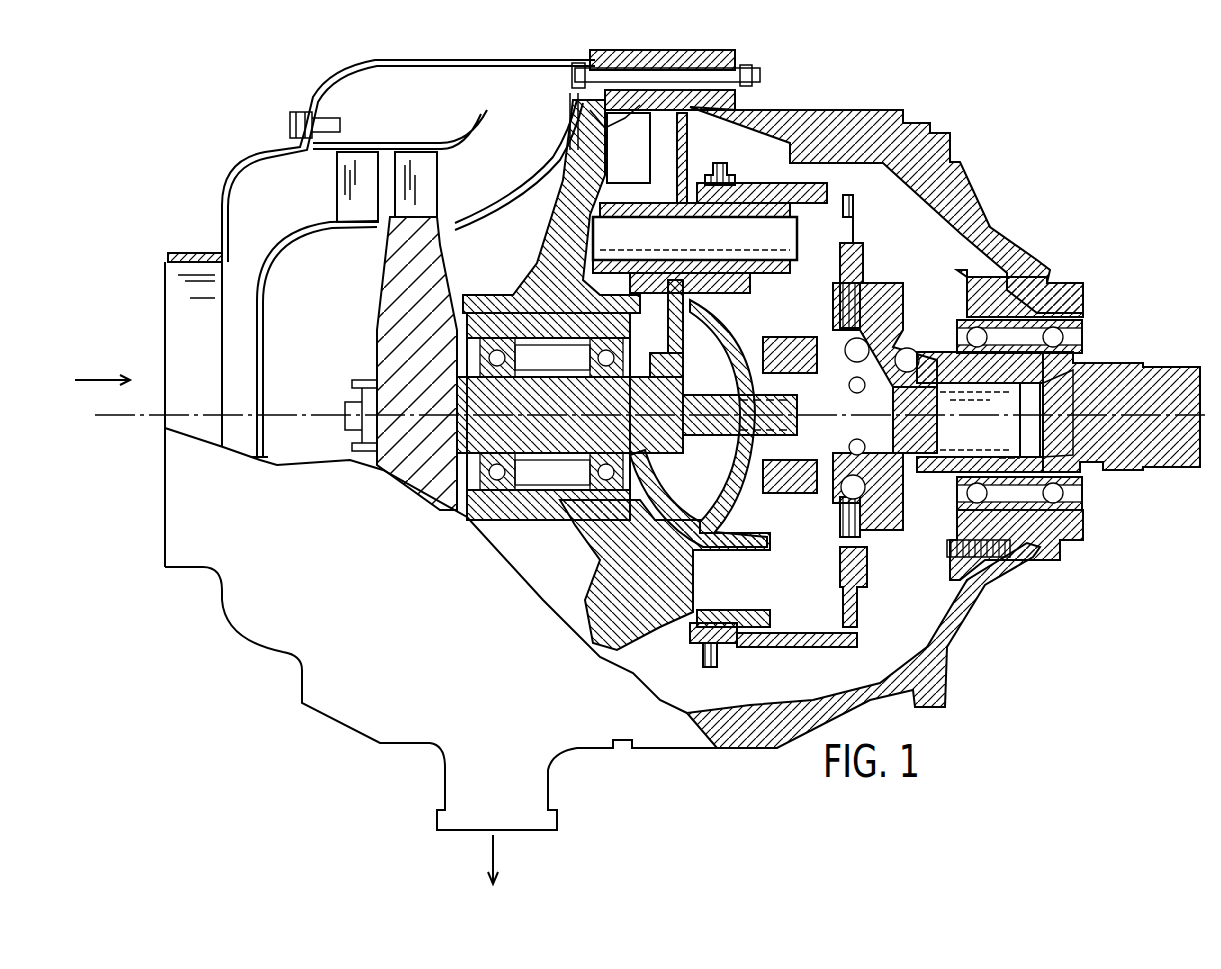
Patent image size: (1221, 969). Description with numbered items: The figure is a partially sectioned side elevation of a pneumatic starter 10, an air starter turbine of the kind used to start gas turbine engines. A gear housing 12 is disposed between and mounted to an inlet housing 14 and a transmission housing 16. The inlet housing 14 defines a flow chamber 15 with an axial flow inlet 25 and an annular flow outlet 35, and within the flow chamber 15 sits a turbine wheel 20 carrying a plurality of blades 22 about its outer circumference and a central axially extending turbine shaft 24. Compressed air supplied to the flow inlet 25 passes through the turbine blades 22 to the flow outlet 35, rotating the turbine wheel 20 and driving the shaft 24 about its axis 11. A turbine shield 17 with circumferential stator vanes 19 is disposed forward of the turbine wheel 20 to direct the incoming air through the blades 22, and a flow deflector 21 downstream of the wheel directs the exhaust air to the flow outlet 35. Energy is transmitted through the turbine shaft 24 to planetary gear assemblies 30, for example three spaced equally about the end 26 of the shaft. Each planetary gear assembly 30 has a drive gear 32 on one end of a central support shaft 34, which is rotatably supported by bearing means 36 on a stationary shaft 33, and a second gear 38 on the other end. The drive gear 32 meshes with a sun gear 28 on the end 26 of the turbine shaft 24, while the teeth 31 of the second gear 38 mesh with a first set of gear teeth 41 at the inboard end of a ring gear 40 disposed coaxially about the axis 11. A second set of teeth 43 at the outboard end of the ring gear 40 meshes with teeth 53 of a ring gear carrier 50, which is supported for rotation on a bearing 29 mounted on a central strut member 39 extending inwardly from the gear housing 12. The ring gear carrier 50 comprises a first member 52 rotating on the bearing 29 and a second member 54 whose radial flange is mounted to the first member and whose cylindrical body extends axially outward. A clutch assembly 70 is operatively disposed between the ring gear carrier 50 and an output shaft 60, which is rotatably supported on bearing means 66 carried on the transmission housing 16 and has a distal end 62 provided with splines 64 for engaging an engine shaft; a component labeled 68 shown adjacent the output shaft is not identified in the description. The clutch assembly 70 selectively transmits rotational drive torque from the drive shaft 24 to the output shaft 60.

The pneumatic starter 10 is at (266, 78).
The axis 11 is at (305, 412).
The gear housing 12 is at (612, 52).
The inlet housing 14 is at (240, 190).
The flow chamber 15 is at (277, 219).
The transmission housing 16 is at (922, 110).
The turbine shield 17 is at (282, 262).
The stator vanes 19 is at (336, 187).
The turbine wheel 20 is at (388, 292).
The flow deflector 21 is at (570, 135).
The blades 22 is at (438, 190).
The turbine shaft 24 is at (560, 375).
The axial flow inlet 25 is at (210, 354).
The end of turbine shaft 26 is at (662, 462).
The sun gear 28 is at (685, 372).
The bearing 29 is at (782, 495).
The planetary gear assembly 30 is at (649, 178).
The teeth 31 is at (672, 322).
The drive gear 32 is at (683, 340).
The stationary shaft 33 is at (565, 237).
The central support shaft 34 is at (676, 200).
The annular flow outlet 35 is at (537, 169).
The bearing means 36 is at (662, 283).
The second gear 38 is at (748, 185).
The central strut member 39 is at (765, 430).
The ring gear 40 is at (703, 165).
The first set of gear teeth 41 is at (678, 643).
The second set of teeth 43 is at (860, 630).
The ring gear carrier 50 is at (858, 595).
The first member 52 is at (800, 318).
The teeth 53 is at (855, 205).
The second member 54 is at (842, 240).
The output shaft 60 is at (1129, 356).
The distal end 62 is at (1113, 470).
The splines 64 is at (1170, 470).
The bearing means 66 is at (1083, 297).
The coupling sleeve 68 is at (947, 460).
The clutch assembly 70 is at (918, 330).